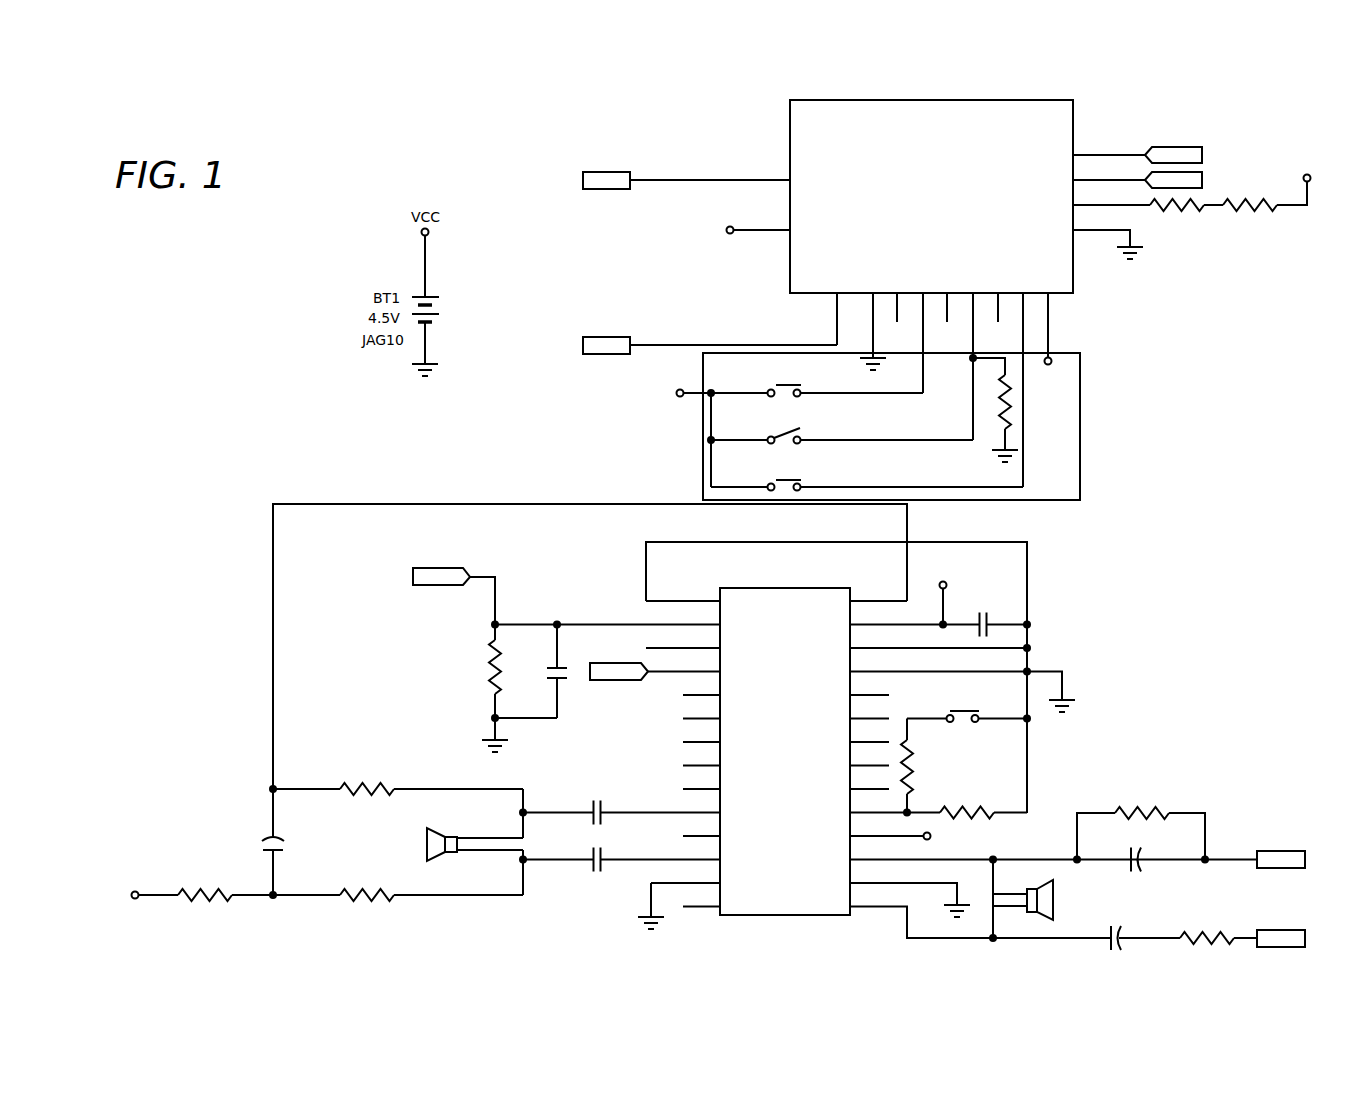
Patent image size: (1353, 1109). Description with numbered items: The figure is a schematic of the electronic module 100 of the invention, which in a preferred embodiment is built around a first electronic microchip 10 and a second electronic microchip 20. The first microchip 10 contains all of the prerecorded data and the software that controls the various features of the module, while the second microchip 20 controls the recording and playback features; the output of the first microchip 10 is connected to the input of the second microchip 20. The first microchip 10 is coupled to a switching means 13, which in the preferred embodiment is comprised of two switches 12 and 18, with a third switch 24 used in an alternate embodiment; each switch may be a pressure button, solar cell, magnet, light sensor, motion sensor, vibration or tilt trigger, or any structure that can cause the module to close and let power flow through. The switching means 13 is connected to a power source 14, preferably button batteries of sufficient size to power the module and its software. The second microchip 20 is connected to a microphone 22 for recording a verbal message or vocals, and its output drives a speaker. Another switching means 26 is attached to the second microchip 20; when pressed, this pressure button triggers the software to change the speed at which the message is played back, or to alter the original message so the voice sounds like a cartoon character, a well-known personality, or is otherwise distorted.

The electronic module 100 is at (686, 151).
The first electronic microchip 10 is at (902, 193).
The switch 12 is at (775, 431).
The switching means 13 is at (1080, 425).
The power source 14 is at (645, 393).
The switch 18 is at (770, 388).
The second electronic microchip 20 is at (797, 725).
The microphone 22 is at (438, 846).
The third switch 24 is at (776, 482).
The switching means 26 is at (1016, 769).